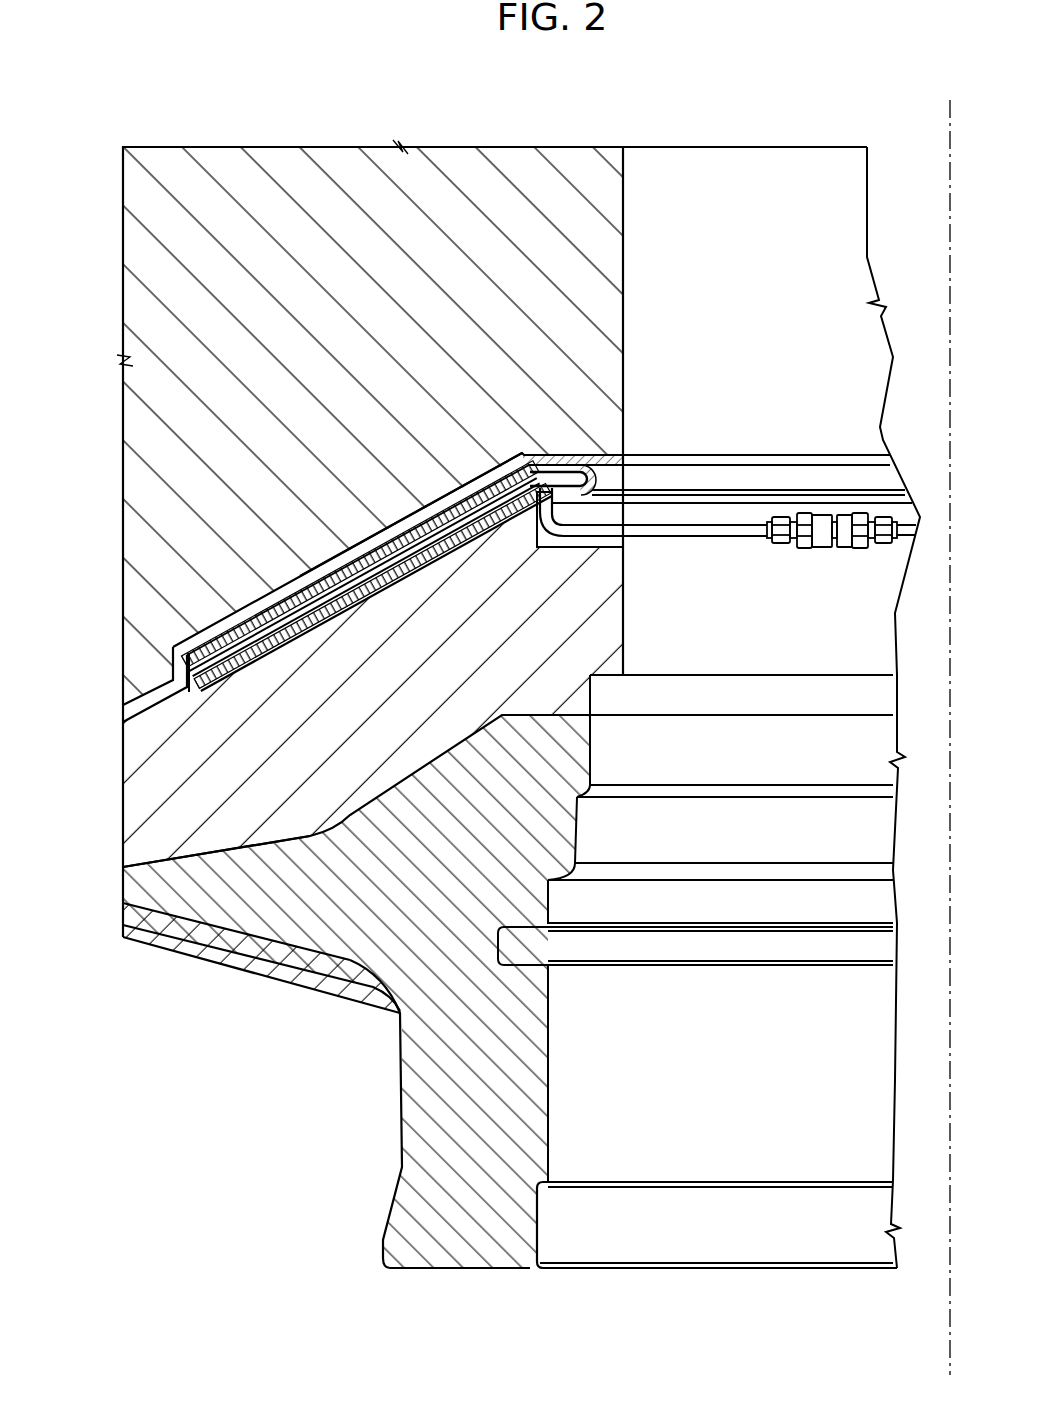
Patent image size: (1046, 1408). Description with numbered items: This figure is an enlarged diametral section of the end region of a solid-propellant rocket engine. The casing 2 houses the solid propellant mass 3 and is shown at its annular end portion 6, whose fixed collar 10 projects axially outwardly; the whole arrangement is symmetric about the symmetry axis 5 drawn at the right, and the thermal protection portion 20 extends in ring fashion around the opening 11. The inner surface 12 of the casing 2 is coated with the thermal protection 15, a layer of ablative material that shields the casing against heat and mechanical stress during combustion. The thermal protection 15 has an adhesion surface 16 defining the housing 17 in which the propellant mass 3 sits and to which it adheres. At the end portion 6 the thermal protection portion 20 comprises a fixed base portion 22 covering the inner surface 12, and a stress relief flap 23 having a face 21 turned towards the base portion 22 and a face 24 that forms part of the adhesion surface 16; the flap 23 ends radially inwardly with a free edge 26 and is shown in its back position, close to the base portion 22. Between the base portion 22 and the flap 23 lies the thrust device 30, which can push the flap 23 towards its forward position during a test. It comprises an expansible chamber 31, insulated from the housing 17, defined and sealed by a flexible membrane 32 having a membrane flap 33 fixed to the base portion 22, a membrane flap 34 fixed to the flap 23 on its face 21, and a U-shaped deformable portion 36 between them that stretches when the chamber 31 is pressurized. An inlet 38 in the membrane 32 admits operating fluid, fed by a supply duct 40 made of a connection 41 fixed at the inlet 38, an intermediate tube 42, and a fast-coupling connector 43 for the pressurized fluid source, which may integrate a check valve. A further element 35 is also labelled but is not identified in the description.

The casing 2 is at (397, 1090).
The solid propellant mass 3 is at (150, 440).
The symmetry axis 5 is at (950, 118).
The annular end portion 6 is at (315, 978).
The collar 10 is at (458, 1248).
The opening 11 is at (630, 1274).
The inner surface 12 is at (227, 842).
The thermal protection 15 is at (167, 837).
The adhesion surface 16 is at (147, 682).
The housing 17 is at (200, 605).
The thermal protection portion 20 is at (170, 772).
The face 21 is at (370, 563).
The base portion 22 is at (540, 640).
The stress relief flap 23 is at (375, 610).
The face 24 is at (470, 490).
The edge 26 is at (590, 482).
The thrust device 30 is at (432, 497).
The expansible chamber 31 is at (193, 686).
The flexible membrane 32 is at (549, 468).
The membrane flap 33 is at (312, 655).
The membrane flap 34 is at (253, 605).
The inner sheet 35 is at (210, 613).
The deformable portion 36 is at (640, 505).
The inlet 38 is at (700, 522).
The supply duct 40 is at (715, 541).
The connection 41 is at (605, 565).
The intermediate tube 42 is at (672, 532).
The connector 43 is at (843, 540).